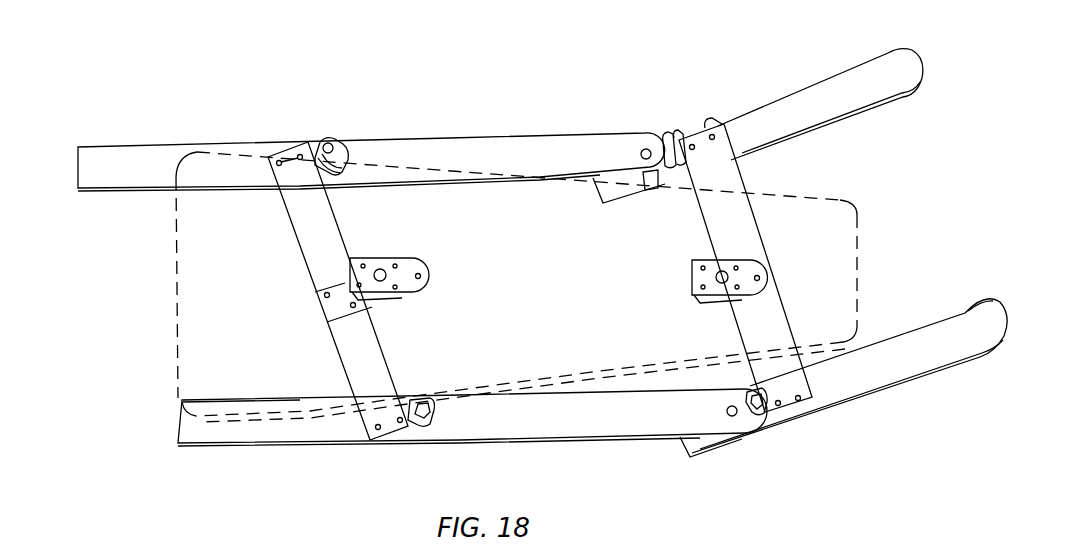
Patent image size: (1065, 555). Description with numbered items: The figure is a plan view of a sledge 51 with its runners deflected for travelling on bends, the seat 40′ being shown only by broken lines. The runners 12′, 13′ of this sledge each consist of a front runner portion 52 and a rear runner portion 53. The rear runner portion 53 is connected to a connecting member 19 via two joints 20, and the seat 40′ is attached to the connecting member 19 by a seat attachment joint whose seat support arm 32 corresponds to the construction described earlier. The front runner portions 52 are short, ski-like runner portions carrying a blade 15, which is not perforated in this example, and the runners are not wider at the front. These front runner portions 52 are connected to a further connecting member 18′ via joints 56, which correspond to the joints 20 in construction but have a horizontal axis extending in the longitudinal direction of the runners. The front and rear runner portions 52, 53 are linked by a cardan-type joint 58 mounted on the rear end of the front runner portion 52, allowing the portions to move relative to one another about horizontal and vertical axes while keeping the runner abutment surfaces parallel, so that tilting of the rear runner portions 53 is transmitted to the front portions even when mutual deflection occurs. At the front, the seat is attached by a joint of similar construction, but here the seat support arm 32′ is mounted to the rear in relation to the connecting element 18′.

The sledge 51 is at (650, 58).
The joint 20 is at (340, 130).
The runner 12′ is at (392, 152).
The cardan-type joint 58 is at (650, 196).
The connecting member 18′ is at (715, 222).
The seat support arm 32′ is at (700, 300).
The seat support arm 32 is at (370, 302).
The connecting member 19 is at (345, 340).
The seat 40′ is at (197, 305).
The blade 15 is at (997, 312).
The front runner portion 52 is at (885, 378).
The joint 56 is at (785, 418).
The rear runner portion 53 is at (320, 440).
The runner 13′ is at (478, 430).